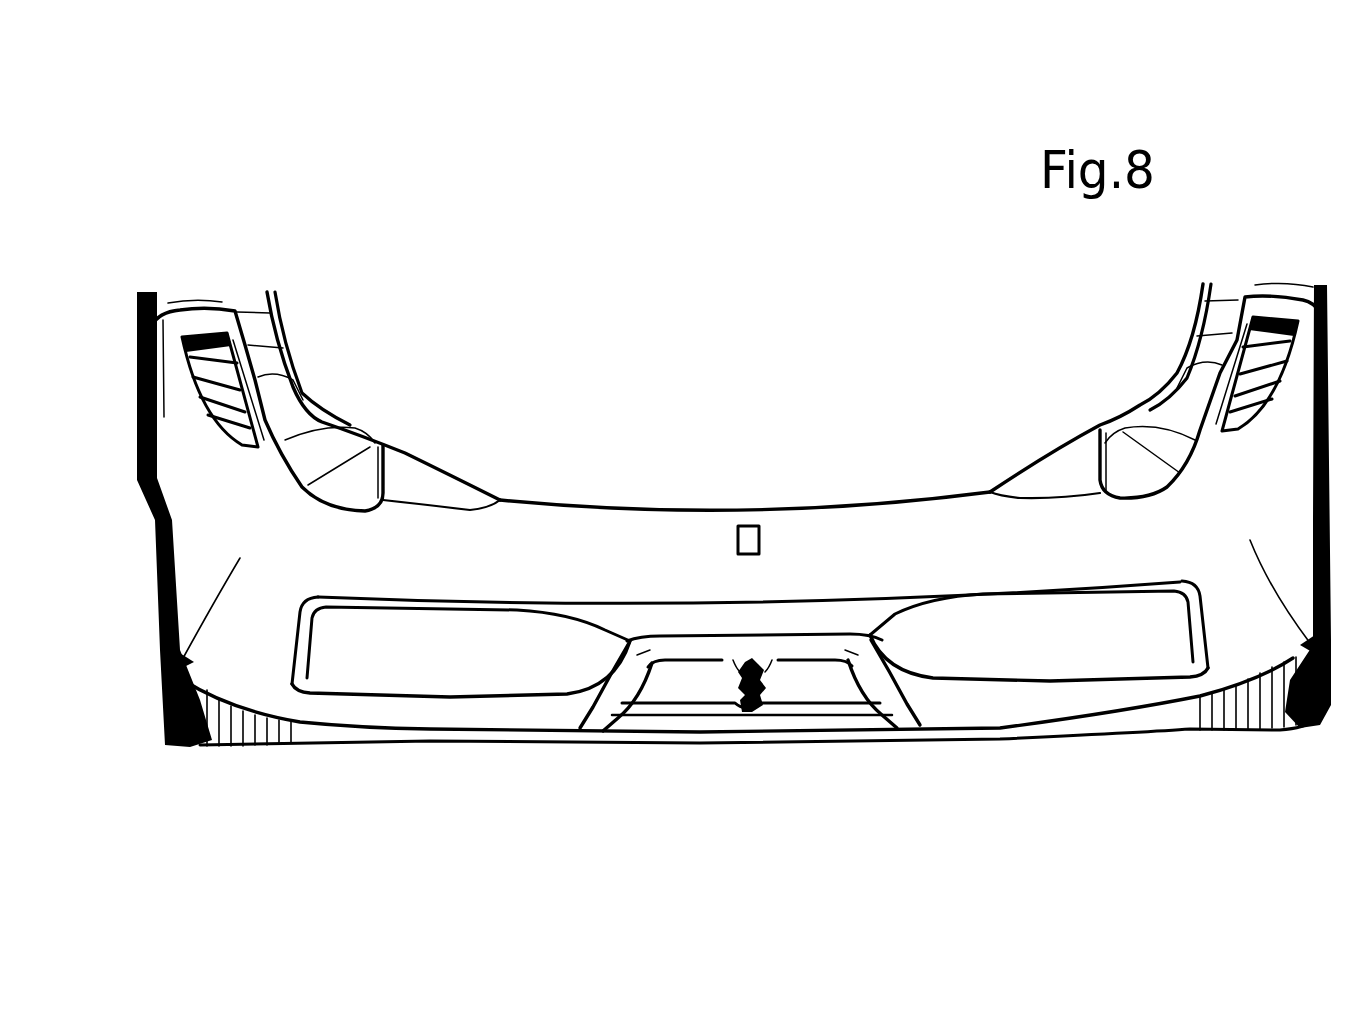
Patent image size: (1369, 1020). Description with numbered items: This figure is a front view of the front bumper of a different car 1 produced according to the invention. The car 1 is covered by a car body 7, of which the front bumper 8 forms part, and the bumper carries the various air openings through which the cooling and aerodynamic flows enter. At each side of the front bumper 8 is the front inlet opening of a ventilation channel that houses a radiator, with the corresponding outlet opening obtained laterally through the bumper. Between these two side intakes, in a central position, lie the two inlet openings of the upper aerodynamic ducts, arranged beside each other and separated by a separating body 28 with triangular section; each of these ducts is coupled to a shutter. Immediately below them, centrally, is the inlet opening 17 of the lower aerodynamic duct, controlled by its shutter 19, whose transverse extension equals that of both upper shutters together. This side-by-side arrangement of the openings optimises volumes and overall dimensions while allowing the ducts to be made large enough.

The car 1 is at (252, 158).
The car body 7 is at (652, 232).
The front bumper 8 is at (590, 530).
The inlet opening 17 is at (690, 723).
The shutter 19 is at (793, 705).
The separating body 28 is at (745, 711).